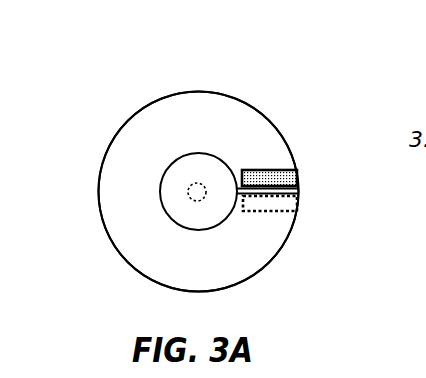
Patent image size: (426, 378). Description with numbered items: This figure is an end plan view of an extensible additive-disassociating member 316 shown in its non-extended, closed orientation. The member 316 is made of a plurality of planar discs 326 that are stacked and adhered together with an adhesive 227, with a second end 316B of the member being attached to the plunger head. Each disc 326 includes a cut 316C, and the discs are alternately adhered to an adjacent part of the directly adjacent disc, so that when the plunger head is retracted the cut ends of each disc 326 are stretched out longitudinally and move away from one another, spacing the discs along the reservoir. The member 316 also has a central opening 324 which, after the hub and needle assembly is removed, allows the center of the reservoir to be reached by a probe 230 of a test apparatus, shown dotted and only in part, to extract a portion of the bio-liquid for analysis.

The extensible additive-disassociating member 316 is at (158, 74).
The central opening 324 is at (152, 166).
The disc 326 is at (100, 213).
The probe 230 is at (187, 200).
The adhesive 227 is at (265, 170).
The second end 316B is at (314, 181).
The cut 316C is at (300, 191).